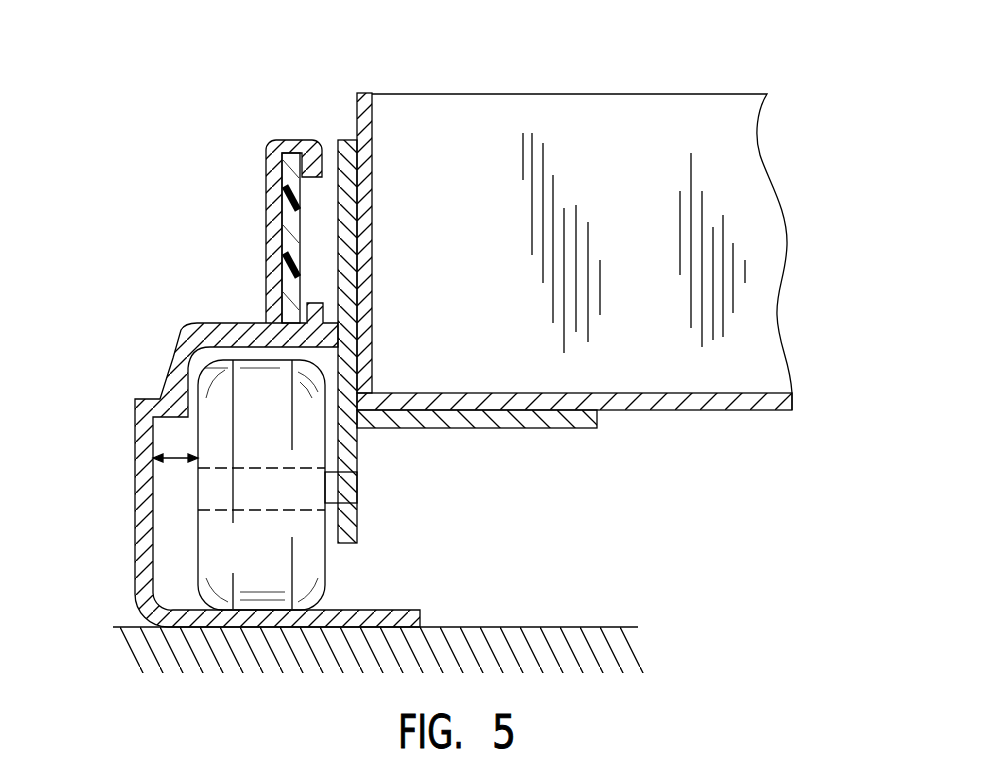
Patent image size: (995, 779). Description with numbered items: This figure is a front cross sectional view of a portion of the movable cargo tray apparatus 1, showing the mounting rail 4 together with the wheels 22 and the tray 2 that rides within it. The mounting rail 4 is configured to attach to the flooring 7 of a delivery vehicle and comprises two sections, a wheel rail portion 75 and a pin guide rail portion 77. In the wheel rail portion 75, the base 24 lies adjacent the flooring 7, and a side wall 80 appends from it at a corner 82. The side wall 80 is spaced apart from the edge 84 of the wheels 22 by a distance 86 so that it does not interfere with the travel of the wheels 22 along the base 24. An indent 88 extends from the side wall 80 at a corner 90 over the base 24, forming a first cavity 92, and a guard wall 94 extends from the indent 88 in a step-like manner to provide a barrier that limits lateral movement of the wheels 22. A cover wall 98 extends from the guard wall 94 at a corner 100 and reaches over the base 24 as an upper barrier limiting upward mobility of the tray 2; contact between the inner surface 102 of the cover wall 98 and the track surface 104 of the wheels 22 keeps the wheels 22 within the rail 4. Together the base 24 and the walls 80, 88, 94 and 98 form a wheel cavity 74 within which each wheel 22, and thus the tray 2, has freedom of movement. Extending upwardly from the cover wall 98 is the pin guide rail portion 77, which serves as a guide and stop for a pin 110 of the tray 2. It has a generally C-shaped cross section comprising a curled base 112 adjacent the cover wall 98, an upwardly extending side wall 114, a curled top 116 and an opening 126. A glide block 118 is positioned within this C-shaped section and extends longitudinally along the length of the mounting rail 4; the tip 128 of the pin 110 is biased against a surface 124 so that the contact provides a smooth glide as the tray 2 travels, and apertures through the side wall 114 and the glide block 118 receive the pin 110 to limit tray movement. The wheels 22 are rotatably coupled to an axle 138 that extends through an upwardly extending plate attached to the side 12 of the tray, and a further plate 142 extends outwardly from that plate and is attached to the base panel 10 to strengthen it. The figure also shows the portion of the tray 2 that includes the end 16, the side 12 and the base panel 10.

The movable cargo tray apparatus 1 is at (234, 70).
The tray 2 is at (576, 240).
The mounting rail 4 is at (116, 330).
The flooring 7 is at (585, 627).
The base panel 10 is at (628, 393).
The side 12 is at (375, 341).
The end 16 is at (663, 175).
The wheels 22 is at (292, 485).
The base 24 is at (389, 610).
The wheel cavity 74 is at (193, 323).
The wheel rail portion 75 is at (257, 431).
The pin guide rail portion 77 is at (252, 172).
The side wall 80 is at (135, 470).
The corner 82 is at (133, 606).
The edge 84 is at (197, 561).
The distance 86 is at (175, 445).
The indent 88 is at (142, 397).
The corner 90 is at (135, 402).
The first cavity 92 is at (189, 520).
The guard wall 94 is at (170, 372).
The cover wall 98 is at (215, 335).
The corner 100 is at (183, 330).
The inner surface 102 is at (262, 343).
The track surface 104 is at (261, 485).
The pin 110 is at (302, 224).
The curled base 112 is at (358, 372).
The side wall 114 is at (267, 149).
The curled top 116 is at (283, 172).
The glide block 118 is at (290, 212).
The surface 124 is at (307, 289).
The opening 126 is at (334, 174).
The tip 128 is at (302, 246).
The axle 138 is at (345, 485).
The plate 142 is at (581, 428).